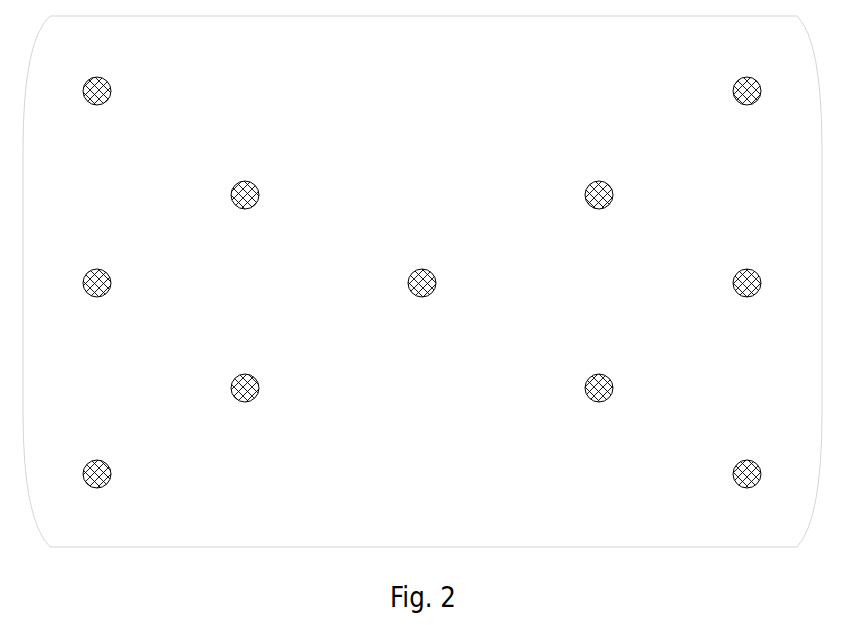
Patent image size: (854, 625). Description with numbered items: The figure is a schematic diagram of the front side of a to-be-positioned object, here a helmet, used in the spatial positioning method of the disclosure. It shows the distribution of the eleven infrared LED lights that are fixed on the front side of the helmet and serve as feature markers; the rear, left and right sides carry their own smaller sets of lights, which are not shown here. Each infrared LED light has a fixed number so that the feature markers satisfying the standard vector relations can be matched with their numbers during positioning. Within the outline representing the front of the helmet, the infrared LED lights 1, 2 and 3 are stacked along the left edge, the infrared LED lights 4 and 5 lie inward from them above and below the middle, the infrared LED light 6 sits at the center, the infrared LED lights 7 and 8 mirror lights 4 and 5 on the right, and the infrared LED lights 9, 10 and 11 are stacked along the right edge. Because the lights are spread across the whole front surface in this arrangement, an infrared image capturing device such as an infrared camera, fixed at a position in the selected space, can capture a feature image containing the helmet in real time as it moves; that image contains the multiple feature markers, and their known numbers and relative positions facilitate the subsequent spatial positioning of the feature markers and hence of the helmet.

The infrared LED light 1 is at (113, 91).
The infrared LED light 2 is at (113, 283).
The infrared LED light 3 is at (113, 474).
The infrared LED light 4 is at (260, 195).
The infrared LED light 5 is at (260, 388).
The infrared LED light 6 is at (438, 283).
The infrared LED light 7 is at (615, 195).
The infrared LED light 8 is at (615, 388).
The infrared LED light 9 is at (763, 91).
The infrared LED light 10 is at (765, 283).
The infrared LED light 11 is at (764, 474).